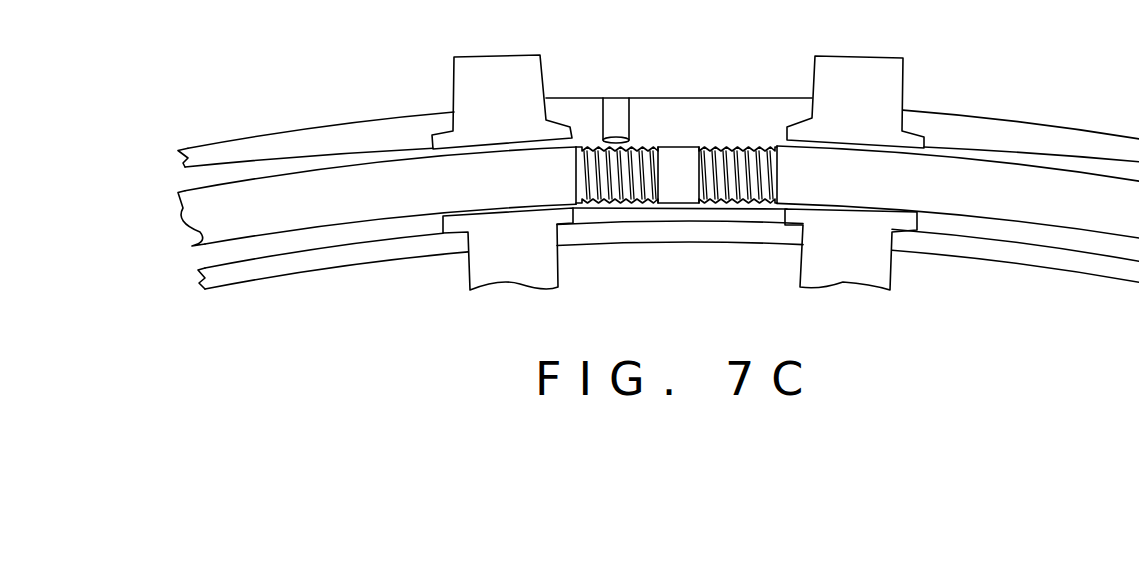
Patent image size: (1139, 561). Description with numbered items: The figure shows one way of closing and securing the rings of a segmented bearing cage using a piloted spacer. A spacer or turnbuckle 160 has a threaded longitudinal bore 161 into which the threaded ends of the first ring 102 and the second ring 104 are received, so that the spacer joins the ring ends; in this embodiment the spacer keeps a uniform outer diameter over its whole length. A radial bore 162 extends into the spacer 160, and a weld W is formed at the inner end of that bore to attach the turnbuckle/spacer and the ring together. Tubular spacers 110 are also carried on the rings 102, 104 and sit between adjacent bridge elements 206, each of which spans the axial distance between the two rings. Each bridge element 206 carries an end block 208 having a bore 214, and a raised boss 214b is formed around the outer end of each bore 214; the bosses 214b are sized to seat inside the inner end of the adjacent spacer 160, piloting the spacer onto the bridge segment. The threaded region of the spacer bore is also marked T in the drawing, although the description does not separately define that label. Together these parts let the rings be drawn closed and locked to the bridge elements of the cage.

The tubular spacer 110 is at (372, 113).
The first circular hoop or ring 102 is at (658, 192).
The second circular hoop or ring 104 is at (658, 192).
The spacer (turnbuckle) 160 is at (679, 85).
The threaded longitudinal bore 161 is at (722, 203).
The radial bore 162 is at (603, 122).
The weld W is at (621, 137).
The threads T is at (737, 150).
The bridge element 206 is at (678, 74).
The end block 208 is at (530, 124).
The bore 214 is at (668, 187).
The raised boss 214b is at (443, 225).